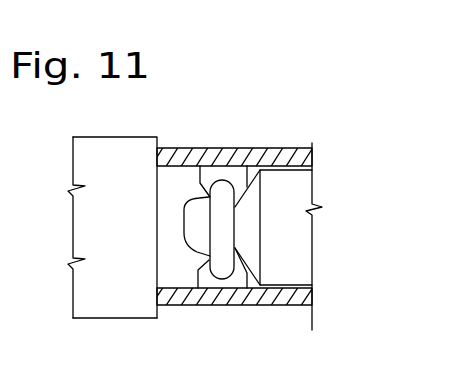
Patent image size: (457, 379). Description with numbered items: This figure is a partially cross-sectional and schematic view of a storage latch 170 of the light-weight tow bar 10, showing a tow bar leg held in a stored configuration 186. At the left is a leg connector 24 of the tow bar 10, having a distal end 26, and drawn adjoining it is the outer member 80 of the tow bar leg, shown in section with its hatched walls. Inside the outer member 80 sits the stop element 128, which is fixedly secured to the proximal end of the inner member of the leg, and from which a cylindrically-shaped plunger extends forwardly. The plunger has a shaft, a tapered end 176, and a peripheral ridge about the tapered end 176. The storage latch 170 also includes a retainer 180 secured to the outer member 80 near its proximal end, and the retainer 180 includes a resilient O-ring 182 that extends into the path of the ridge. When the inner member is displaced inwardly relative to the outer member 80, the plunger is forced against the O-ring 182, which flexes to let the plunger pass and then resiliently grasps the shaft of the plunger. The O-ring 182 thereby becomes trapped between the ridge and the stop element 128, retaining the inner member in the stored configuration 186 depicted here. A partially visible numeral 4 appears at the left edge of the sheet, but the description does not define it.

The tool 4 is at (6, 228).
The tow bar 10 is at (287, 101).
The leg connector 24 is at (95, 150).
The distal end 26 is at (83, 223).
The outer member 80 is at (286, 305).
The stop element 128 is at (283, 183).
The storage latch 170 is at (207, 321).
The tapered end 176 is at (196, 212).
The retainer 180 is at (226, 170).
The O-ring 182 is at (225, 260).
The stored configuration 186 is at (165, 328).